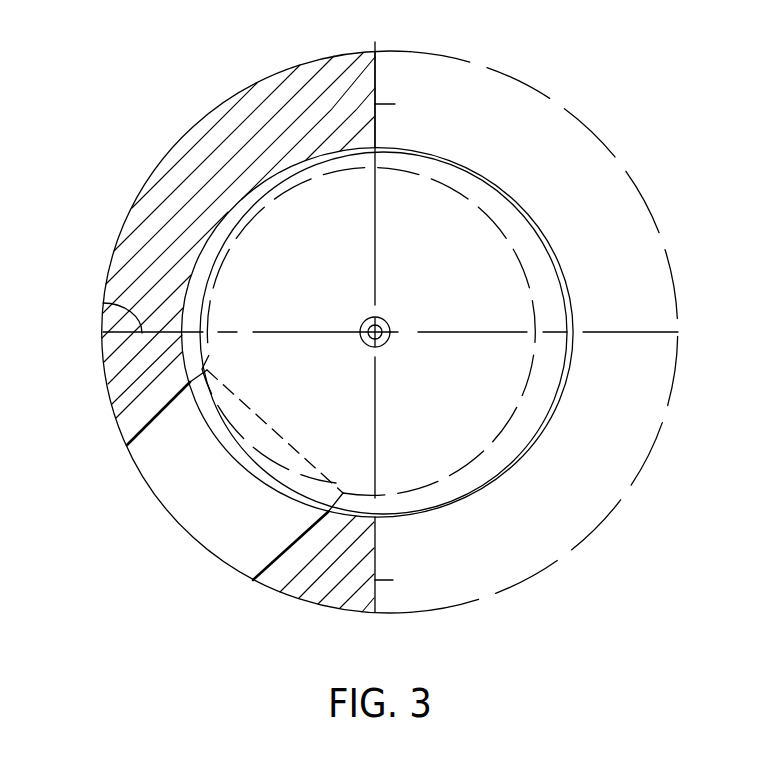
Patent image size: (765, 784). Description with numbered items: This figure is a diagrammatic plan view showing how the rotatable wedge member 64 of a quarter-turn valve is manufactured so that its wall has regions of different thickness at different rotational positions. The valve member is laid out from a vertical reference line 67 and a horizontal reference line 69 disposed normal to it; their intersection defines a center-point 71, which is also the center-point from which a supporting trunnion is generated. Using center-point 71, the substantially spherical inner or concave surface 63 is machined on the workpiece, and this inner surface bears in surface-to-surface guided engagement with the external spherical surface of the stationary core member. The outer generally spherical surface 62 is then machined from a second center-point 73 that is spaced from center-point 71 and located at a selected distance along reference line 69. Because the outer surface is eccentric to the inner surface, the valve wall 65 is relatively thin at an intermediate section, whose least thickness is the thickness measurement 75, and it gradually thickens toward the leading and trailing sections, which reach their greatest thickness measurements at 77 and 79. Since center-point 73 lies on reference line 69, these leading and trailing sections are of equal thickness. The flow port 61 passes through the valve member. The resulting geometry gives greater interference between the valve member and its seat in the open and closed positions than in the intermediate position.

The flow port 61 is at (186, 487).
The outer generally spherical surface 62 is at (127, 222).
The substantially spherical inner or concave surface 63 is at (192, 280).
The rotatable wedge member 64 is at (174, 104).
The valve wall 65 is at (293, 90).
The vertical reference line 67 is at (378, 212).
The horizontal reference line 69 is at (302, 336).
The center-point 71 is at (378, 330).
The center-point 73 is at (390, 332).
The thickness measurement 75 is at (102, 303).
The greatest thickness measurement 77 is at (395, 104).
The greatest thickness measurement 79 is at (393, 580).